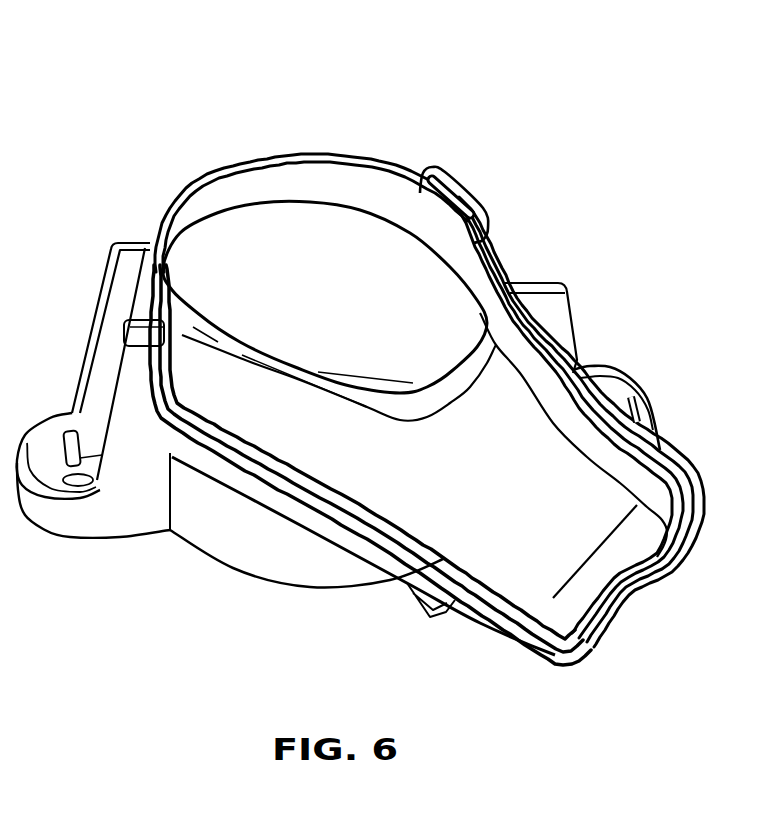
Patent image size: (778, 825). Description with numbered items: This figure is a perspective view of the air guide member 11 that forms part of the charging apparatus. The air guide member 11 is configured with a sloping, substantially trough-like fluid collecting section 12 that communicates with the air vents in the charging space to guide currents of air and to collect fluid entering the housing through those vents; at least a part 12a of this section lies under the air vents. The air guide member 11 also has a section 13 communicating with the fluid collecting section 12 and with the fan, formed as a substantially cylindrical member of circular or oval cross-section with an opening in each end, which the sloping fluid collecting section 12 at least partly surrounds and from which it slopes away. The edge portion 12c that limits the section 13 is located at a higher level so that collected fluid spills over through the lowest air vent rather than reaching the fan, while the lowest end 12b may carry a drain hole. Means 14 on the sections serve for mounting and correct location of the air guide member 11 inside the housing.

The air guide member 11 is at (145, 160).
The fluid collecting section 12 is at (523, 402).
The part of the fluid collecting section 12a is at (287, 433).
The lowest end 12b is at (565, 600).
The edge portion 12c is at (337, 400).
The section communicating with the fluid collecting section and with the fan 13 is at (266, 213).
The means for mounting and/or correct location 14 is at (537, 303).